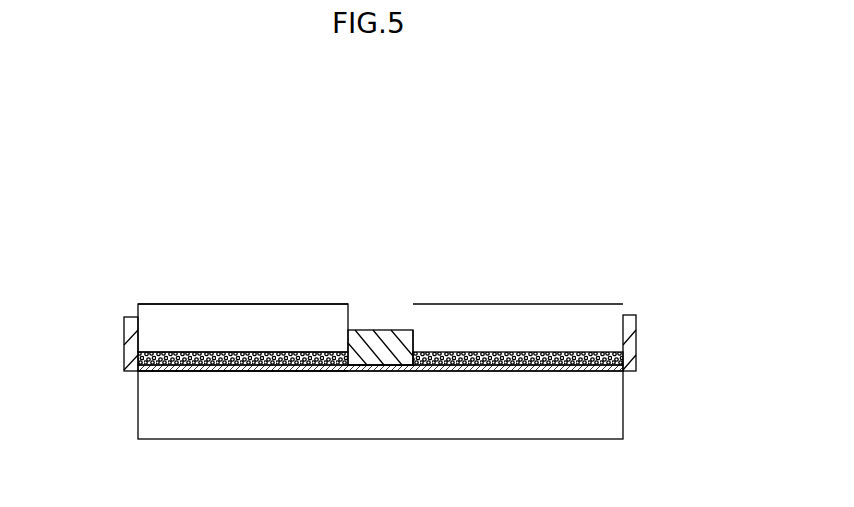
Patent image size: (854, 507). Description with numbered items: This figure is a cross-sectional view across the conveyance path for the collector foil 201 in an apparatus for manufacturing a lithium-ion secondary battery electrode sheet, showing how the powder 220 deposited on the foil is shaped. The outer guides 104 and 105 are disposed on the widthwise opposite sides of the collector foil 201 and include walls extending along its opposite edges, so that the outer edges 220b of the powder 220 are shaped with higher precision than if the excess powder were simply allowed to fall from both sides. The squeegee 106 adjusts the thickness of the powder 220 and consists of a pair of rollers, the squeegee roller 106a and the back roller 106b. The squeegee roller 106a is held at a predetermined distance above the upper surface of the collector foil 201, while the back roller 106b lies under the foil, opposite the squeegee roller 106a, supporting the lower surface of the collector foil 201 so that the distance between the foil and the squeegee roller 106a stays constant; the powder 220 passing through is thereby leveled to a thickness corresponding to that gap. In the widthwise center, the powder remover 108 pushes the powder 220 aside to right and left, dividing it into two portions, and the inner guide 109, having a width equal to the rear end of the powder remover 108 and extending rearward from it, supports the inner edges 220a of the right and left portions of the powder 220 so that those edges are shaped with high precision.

The outer guide 104 is at (124, 335).
The outer guide 105 is at (640, 330).
The squeegee 106 is at (219, 273).
The squeegee roller 106a is at (250, 304).
The back roller 106b is at (624, 410).
The powder remover 108 is at (362, 327).
The inner guide 109 is at (413, 333).
The collector foil 201 is at (247, 372).
The powder 220 is at (181, 355).
The inner edges of the powder 220a is at (370, 371).
The outer edges of the powder 220b is at (126, 362).